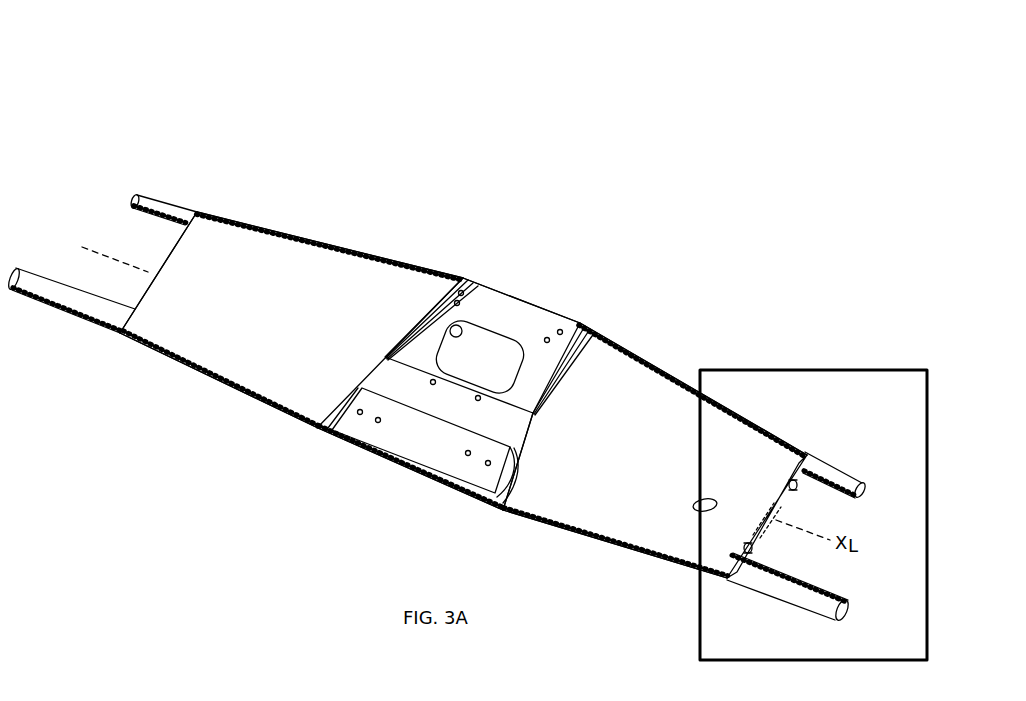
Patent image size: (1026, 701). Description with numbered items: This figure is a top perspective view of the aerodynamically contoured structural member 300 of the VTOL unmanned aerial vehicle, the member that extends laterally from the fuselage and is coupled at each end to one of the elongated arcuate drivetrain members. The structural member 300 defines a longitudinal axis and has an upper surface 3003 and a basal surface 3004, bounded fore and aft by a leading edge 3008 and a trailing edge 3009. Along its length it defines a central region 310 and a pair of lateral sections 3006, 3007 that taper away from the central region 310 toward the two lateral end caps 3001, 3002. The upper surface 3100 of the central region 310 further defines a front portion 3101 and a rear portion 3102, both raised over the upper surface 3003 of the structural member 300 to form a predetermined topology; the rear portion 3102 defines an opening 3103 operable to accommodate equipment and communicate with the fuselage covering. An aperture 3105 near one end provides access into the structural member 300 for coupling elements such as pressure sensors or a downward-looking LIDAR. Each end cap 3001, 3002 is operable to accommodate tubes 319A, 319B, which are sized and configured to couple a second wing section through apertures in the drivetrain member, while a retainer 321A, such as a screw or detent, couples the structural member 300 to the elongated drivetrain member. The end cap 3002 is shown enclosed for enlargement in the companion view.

The structural member 300 is at (105, 68).
The tube 319A is at (37, 290).
The tube 319B is at (160, 212).
The lateral end cap 3001 is at (157, 262).
The retainer 321A is at (133, 302).
The lateral section 3006 is at (230, 352).
The basal surface 3004 is at (247, 397).
The leading edge 3008 is at (297, 420).
The central region 310 is at (374, 456).
The upper surface of central region 3100 is at (392, 384).
The front portion 3101 is at (443, 459).
The rear portion 3102 is at (432, 336).
The opening 3103 is at (477, 350).
The trailing edge 3009 is at (622, 351).
The lateral section 3007 is at (623, 413).
The upper surface 3003 is at (583, 528).
The aperture 3105 is at (700, 507).
The lateral end cap 3002 is at (775, 495).